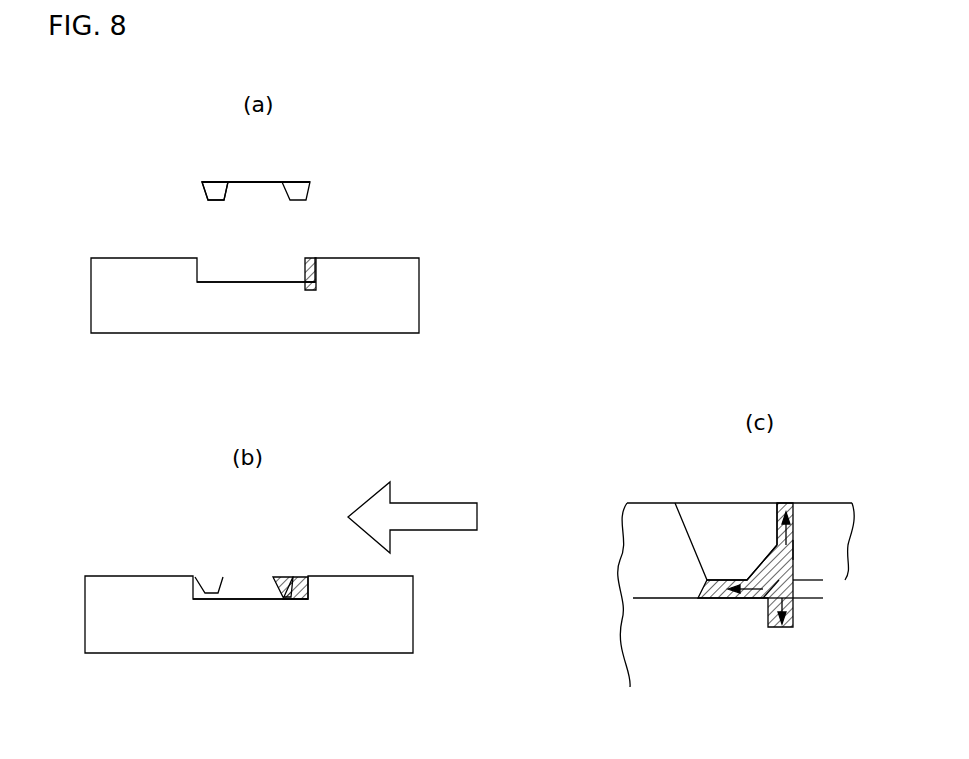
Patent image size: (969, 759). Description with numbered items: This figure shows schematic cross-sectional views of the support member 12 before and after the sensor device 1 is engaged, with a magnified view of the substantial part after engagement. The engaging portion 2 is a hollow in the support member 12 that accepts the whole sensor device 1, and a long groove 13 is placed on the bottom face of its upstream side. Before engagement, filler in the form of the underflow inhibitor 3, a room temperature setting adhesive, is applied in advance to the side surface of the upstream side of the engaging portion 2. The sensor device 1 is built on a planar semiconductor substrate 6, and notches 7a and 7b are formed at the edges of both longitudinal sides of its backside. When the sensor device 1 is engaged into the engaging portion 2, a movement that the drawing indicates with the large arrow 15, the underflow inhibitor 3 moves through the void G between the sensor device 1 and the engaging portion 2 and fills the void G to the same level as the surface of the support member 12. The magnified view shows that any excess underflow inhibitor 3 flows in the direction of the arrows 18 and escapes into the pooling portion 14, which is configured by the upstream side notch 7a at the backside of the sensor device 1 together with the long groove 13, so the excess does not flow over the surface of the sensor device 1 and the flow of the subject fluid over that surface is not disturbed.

The sensor device 1 is at (218, 192).
The engaging portion 2 is at (248, 282).
The underflow inhibitor 3 is at (316, 271).
The planar semiconductor substrate 6 is at (698, 517).
The notch 7a is at (310, 200).
The notch 7b is at (207, 202).
The support member 12 is at (390, 313).
The long groove 13 is at (316, 290).
The pooling portion 14 is at (310, 597).
The pressing direction 15 is at (427, 520).
The arrow 18 is at (795, 543).
The void G is at (783, 503).